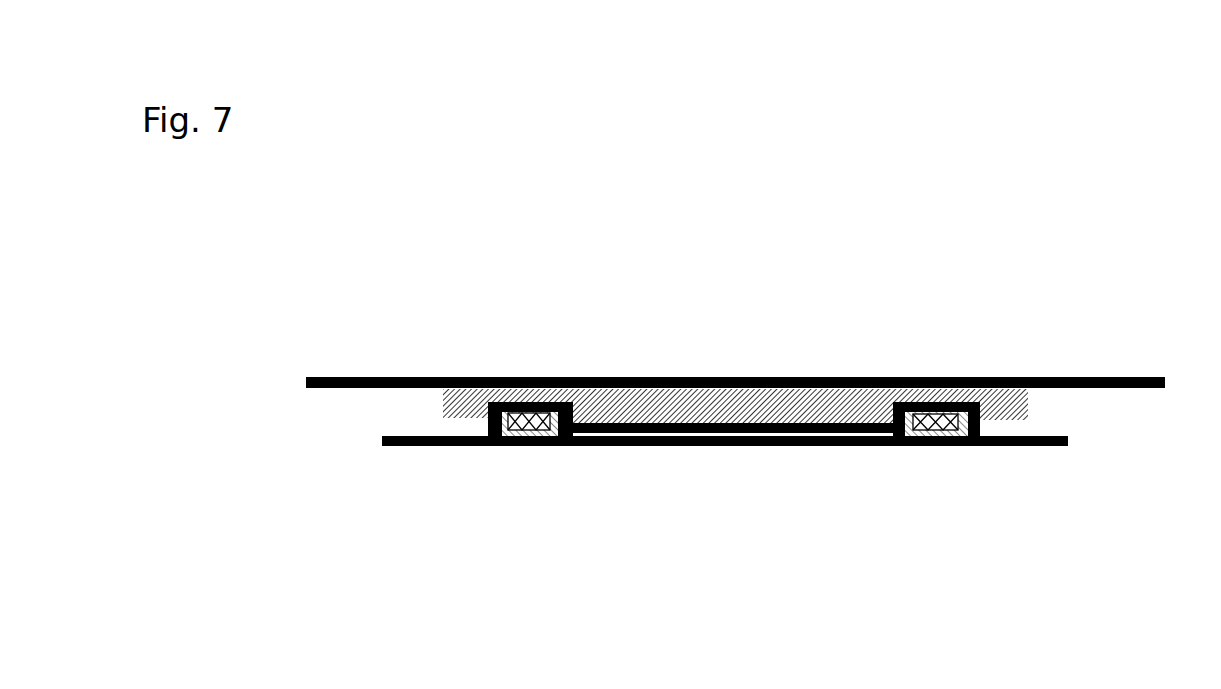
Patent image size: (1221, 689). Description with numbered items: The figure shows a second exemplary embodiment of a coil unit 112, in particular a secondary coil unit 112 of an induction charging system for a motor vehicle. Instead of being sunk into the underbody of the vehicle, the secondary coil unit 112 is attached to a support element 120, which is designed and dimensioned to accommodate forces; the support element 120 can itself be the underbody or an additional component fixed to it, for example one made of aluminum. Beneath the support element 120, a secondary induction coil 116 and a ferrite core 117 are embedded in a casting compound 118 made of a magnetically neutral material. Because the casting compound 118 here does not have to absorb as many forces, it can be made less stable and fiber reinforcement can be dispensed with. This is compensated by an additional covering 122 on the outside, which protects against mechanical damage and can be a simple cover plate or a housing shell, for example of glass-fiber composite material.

The secondary coil unit 112 is at (1122, 107).
The secondary induction coil 116 is at (525, 423).
The ferrite core 117 is at (980, 428).
The casting compound 118 is at (783, 403).
The support element 120 is at (395, 377).
The covering 122 is at (1014, 447).